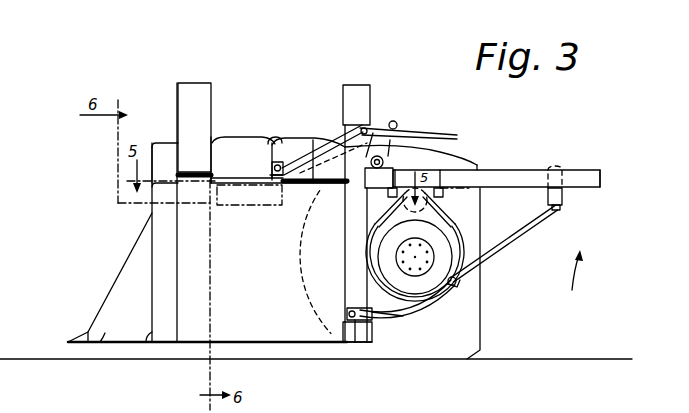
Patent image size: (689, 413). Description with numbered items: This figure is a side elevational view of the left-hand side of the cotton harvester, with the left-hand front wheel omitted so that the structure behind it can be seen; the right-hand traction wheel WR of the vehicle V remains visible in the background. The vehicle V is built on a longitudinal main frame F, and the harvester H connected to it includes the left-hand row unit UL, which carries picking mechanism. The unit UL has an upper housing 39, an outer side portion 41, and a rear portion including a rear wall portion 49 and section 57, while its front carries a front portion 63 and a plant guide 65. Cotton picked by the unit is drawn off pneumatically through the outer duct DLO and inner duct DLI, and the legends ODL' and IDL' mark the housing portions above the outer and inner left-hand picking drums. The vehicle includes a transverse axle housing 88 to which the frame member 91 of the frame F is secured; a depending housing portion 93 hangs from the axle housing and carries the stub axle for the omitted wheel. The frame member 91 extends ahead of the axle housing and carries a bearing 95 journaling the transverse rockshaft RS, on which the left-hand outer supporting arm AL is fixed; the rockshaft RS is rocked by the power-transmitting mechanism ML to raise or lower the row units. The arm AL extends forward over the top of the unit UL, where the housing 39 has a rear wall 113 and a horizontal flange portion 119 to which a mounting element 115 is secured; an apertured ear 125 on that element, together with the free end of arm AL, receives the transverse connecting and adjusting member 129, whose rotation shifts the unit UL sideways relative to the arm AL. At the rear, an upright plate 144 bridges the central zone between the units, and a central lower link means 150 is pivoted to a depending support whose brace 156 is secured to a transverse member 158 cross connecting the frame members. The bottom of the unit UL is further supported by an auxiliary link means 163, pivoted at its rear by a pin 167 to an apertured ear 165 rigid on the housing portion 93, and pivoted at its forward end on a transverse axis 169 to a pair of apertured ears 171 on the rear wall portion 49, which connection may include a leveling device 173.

The upper housing 39 is at (157, 140).
The outer side portion 41 is at (205, 335).
The rear wall portion 49 is at (360, 337).
The rear portion 57 is at (365, 335).
The front portion 63 is at (148, 338).
The plant guide 65 is at (103, 340).
The transverse axle housing 88 is at (467, 200).
The frame member 91 is at (515, 173).
The depending housing portion 93 is at (440, 245).
The bearing 95 is at (418, 172).
The rear wall 113 is at (277, 138).
The mounting element 115 is at (273, 175).
The horizontal flange portion 119 is at (278, 176).
The apertured ear 125 is at (318, 172).
The connecting and adjusting member 129 is at (272, 164).
The upright plate 144 is at (375, 332).
The link means 150 is at (403, 318).
The brace 156 is at (510, 240).
The transverse member 158 is at (565, 197).
The link means 163 is at (443, 304).
The apertured ear 165 is at (455, 275).
The pin 167 is at (464, 289).
The transverse axis 169 is at (348, 310).
The apertured ears 171 is at (350, 318).
The leveling device 173 is at (360, 290).
The outer duct DLO is at (208, 70).
The inner duct DLI is at (360, 84).
The outer left drum location ODL' is at (279, 140).
The inner left drum location IDL' is at (309, 216).
The left-hand outer supporting arm AL is at (329, 140).
The left-hand power-transmitting mechanism ML is at (420, 133).
The rockshaft RS is at (384, 160).
The main frame F is at (588, 175).
The harvester H is at (85, 287).
The left-hand row unit UL is at (243, 332).
The right-hand traction wheel WR is at (480, 332).
The vehicle V is at (574, 275).